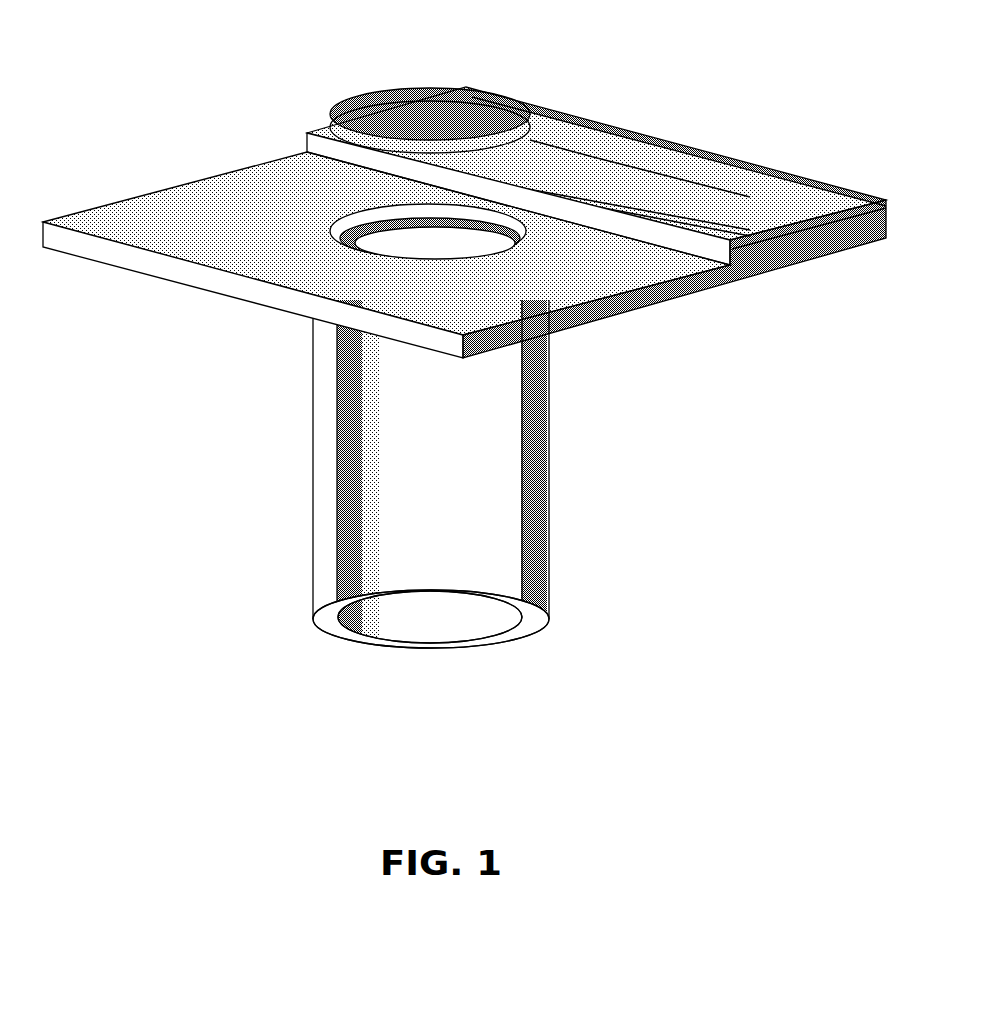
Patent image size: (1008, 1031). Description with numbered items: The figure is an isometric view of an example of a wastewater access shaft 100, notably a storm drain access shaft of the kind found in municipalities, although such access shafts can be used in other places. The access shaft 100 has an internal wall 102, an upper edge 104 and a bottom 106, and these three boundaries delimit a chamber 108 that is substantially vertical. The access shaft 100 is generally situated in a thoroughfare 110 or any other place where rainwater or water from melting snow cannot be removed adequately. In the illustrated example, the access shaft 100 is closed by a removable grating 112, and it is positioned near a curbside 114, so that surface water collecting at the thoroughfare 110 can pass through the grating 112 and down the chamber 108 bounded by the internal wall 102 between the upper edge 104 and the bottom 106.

The wastewater access shaft 100 is at (464, 365).
The internal wall 102 is at (400, 510).
The upper edge 104 is at (518, 229).
The bottom 106 is at (459, 622).
The chamber 108 is at (406, 446).
The thoroughfare 110 is at (464, 232).
The removable grating 112 is at (421, 89).
The curbside 114 is at (700, 240).